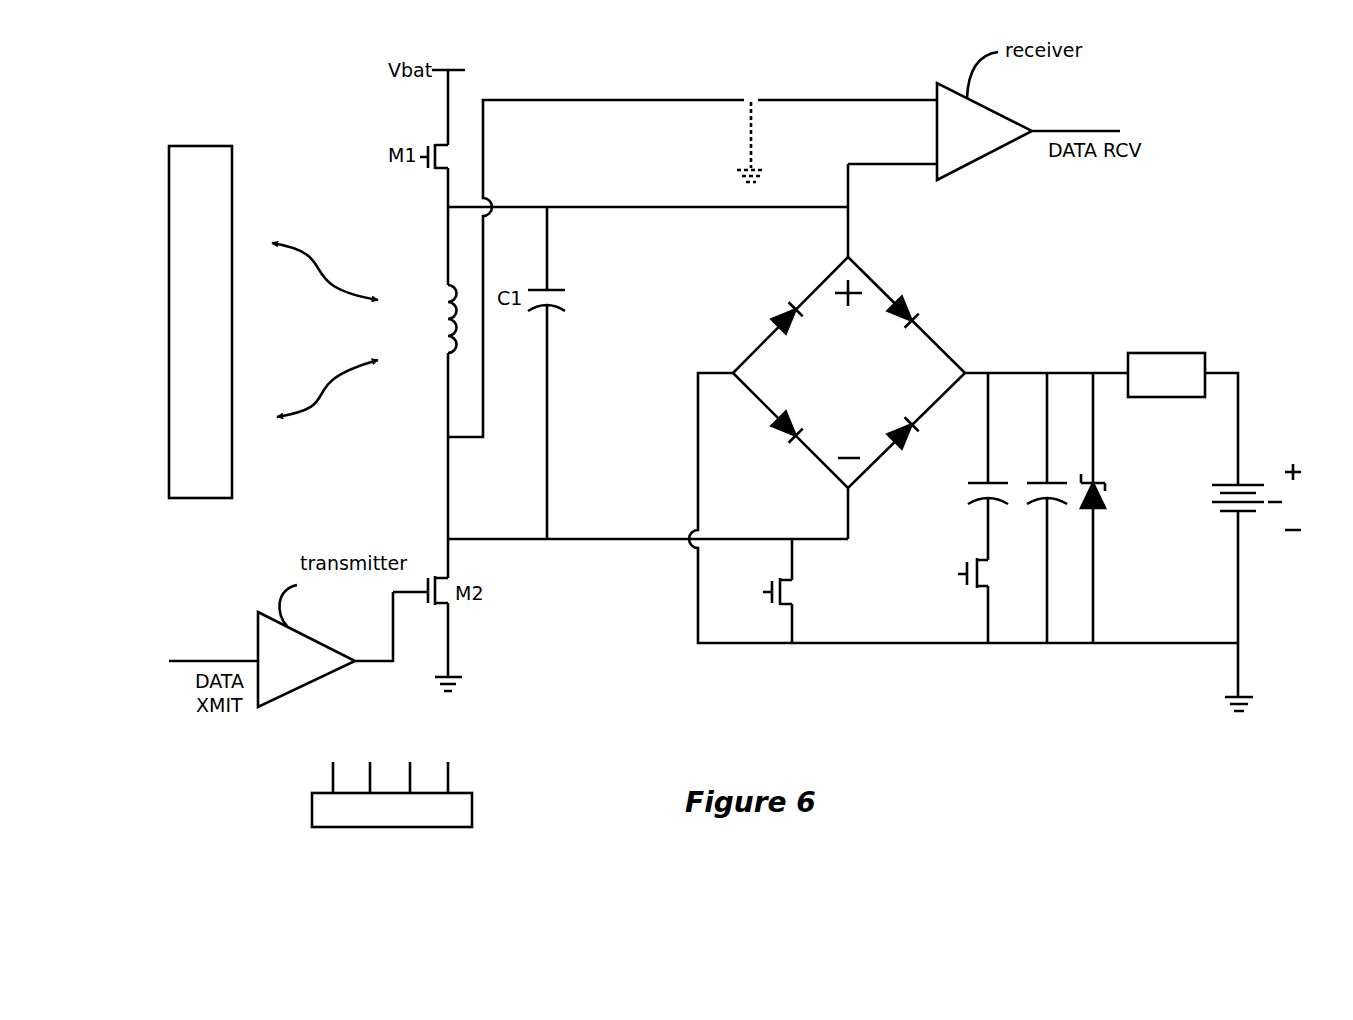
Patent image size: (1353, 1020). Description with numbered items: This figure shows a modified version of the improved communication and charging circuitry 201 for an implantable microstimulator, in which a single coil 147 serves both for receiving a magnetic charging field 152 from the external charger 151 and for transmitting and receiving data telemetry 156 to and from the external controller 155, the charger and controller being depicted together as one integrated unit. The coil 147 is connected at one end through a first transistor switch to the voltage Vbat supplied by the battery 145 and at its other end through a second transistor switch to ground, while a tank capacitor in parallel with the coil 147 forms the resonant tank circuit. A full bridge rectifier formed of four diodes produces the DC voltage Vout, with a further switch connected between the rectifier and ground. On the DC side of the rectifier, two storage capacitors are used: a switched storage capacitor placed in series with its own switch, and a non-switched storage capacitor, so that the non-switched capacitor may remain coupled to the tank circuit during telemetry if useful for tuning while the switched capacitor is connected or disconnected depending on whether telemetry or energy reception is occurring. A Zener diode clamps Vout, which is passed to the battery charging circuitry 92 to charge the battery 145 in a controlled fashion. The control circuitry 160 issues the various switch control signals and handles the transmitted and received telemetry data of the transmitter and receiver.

The external charger 151 is at (258, 263).
The external controller 155 is at (203, 130).
The magnetic charging field 152 is at (330, 262).
The data telemetry 156 is at (346, 392).
The coil 147 is at (424, 319).
The control circuitry 160 is at (392, 783).
The battery charging circuitry 92 is at (1168, 353).
The battery 145 is at (1250, 485).
The communication and charging circuitry 201 is at (1062, 760).